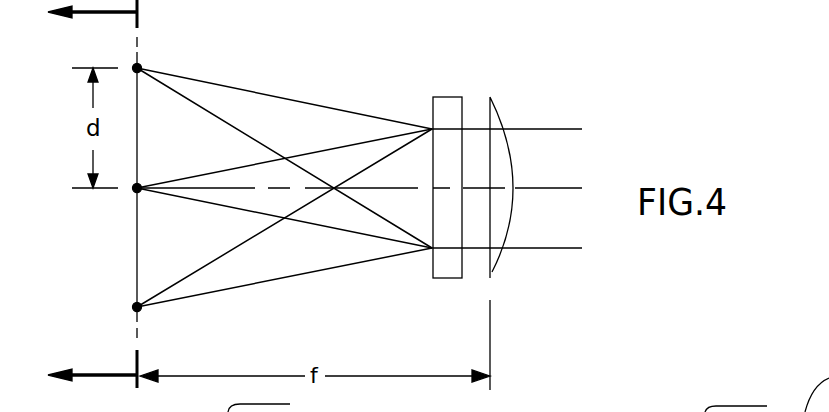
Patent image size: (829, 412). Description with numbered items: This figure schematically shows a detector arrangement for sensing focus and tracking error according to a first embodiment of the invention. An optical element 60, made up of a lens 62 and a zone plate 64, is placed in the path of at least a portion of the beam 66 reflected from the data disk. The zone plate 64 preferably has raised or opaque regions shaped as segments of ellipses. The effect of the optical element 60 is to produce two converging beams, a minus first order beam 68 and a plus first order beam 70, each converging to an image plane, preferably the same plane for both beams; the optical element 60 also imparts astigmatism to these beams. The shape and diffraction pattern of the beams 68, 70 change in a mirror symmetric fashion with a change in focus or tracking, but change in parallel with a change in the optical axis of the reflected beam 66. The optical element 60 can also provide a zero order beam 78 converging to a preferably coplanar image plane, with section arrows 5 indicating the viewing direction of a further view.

The section line for FIG. 5 is at (81, 194).
The optical element 60 is at (475, 201).
The lens 62 is at (497, 263).
The zone plate 64 is at (453, 284).
The beam reflected from the disk 66 is at (535, 128).
The minus first order beam 68 is at (170, 72).
The plus first order beam 70 is at (180, 275).
The zero order beam 78 is at (203, 192).